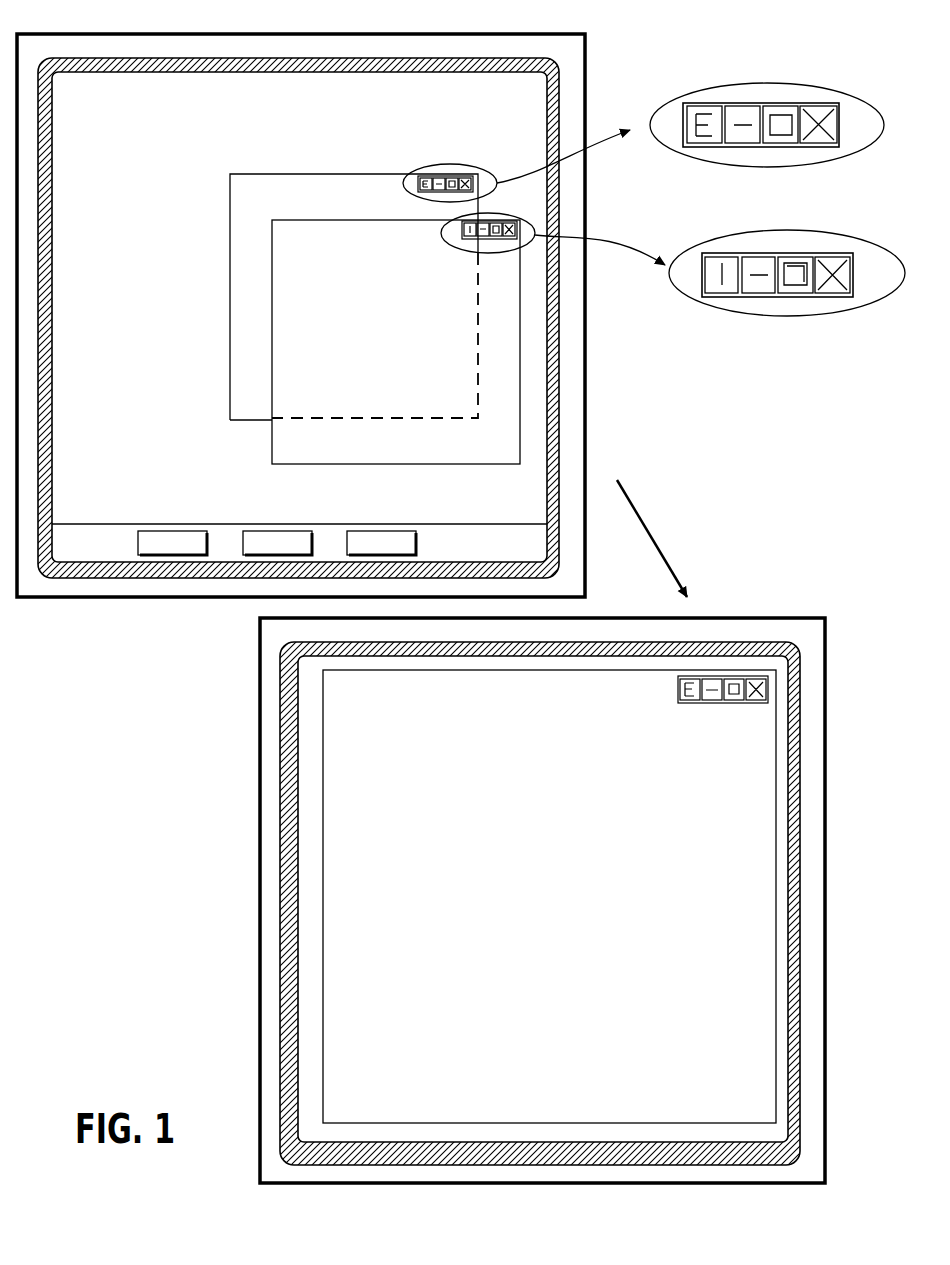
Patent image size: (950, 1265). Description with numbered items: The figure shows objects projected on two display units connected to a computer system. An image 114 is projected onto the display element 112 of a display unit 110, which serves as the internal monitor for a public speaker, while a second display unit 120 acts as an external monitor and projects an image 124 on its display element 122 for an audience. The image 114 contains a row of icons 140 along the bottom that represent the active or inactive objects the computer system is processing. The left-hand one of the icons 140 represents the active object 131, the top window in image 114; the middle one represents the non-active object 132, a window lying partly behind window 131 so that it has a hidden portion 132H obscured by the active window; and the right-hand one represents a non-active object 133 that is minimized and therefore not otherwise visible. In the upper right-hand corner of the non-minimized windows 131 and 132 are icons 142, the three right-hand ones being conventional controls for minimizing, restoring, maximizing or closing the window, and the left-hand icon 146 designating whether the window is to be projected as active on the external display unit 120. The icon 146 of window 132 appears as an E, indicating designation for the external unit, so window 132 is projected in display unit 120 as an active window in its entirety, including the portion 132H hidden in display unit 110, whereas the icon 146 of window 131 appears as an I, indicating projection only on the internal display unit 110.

The display unit 110 is at (240, 585).
The display element 112 is at (560, 207).
The image 114 is at (233, 125).
The second display unit 120 is at (273, 1043).
The display element 122 is at (282, 874).
The image 124 is at (310, 925).
The active object 131 is at (505, 451).
The non-active object 132 is at (296, 205).
The hidden portion 132H is at (480, 406).
The non-active object 133 is at (370, 540).
The icons 140 is at (222, 505).
The icons 142 is at (758, 80).
The icon 146 is at (703, 110).